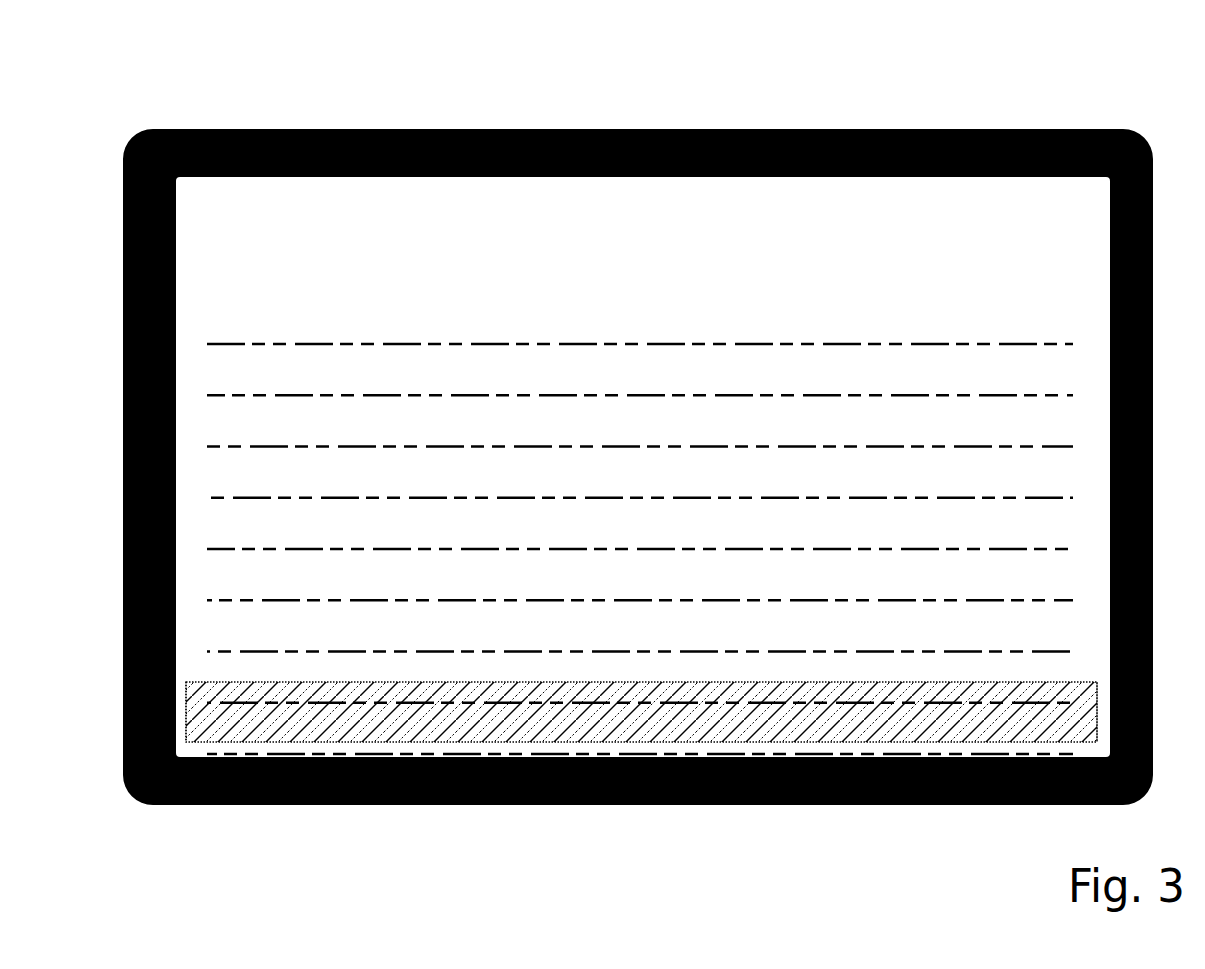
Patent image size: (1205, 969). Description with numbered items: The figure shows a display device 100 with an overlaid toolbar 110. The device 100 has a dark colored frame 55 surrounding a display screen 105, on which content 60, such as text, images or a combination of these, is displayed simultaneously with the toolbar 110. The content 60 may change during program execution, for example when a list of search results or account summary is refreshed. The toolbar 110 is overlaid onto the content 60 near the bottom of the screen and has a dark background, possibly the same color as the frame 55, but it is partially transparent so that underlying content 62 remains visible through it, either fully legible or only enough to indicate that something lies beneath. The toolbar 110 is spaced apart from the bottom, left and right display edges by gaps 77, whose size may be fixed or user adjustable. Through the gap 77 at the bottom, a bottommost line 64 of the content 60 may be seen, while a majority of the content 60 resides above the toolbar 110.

The display device 100 is at (1022, 86).
The frame 55 is at (630, 128).
The display screen 105 is at (966, 213).
The content 60 is at (828, 344).
The toolbar 110 is at (900, 682).
The underlying content 62 is at (530, 703).
The bottommost line 64 is at (676, 752).
The gaps 77 is at (204, 750).